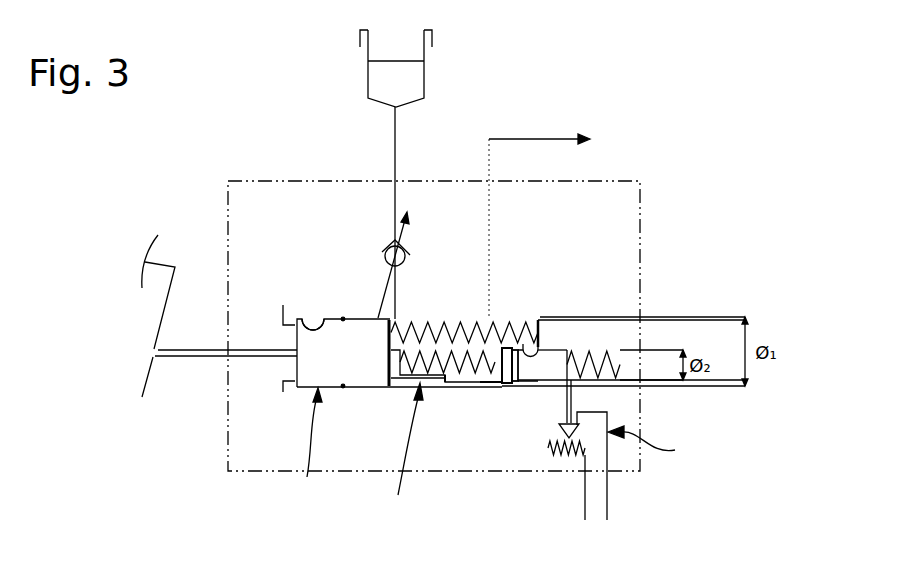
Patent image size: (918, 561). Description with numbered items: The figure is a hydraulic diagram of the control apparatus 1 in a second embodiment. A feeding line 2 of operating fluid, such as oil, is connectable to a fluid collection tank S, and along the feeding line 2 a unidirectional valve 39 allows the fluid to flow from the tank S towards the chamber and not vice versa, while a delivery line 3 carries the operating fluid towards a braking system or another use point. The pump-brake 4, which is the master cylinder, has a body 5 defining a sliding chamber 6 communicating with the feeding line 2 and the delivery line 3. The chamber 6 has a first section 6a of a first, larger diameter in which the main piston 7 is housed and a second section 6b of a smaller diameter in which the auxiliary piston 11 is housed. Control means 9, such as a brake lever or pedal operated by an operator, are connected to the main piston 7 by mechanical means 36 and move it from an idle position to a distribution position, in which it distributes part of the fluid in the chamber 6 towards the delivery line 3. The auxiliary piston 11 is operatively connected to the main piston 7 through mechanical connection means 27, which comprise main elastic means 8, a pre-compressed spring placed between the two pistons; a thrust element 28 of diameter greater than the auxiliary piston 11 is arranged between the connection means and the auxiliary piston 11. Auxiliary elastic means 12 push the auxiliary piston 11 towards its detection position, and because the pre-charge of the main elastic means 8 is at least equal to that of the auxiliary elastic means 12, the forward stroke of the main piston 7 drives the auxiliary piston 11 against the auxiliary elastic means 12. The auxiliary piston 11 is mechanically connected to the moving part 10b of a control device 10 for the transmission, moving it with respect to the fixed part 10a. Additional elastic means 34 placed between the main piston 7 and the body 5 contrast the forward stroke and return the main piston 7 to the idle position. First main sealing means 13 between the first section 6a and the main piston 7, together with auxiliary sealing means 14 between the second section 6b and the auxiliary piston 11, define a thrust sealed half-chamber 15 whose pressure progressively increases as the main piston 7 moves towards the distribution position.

The fluid collection tank S is at (412, 78).
The apparatus 1 is at (255, 182).
The feeding line 2 is at (395, 145).
The delivery line 3 is at (500, 139).
The pump-brake 4 is at (310, 449).
The body 5 is at (417, 318).
The sliding chamber 6 is at (462, 372).
The first section 6a is at (306, 327).
The second section 6b is at (527, 344).
The main piston 7 is at (310, 365).
The main elastic means 8 is at (390, 365).
The control means 9 is at (165, 267).
The control device 10 is at (655, 444).
The fixed part 10a is at (607, 485).
The moving part 10b is at (570, 400).
The auxiliary piston 11 is at (527, 365).
The auxiliary elastic means 12 is at (594, 350).
The first main sealing means 13 is at (343, 318).
The auxiliary sealing means 14 is at (545, 347).
The thrust sealed half-chamber 15 is at (485, 372).
The mechanical connection means 27 is at (404, 451).
The thrust element 28 is at (513, 375).
The additional elastic means 34 is at (472, 318).
The mechanical means 36 is at (178, 357).
The unidirectional valve 39 is at (389, 248).